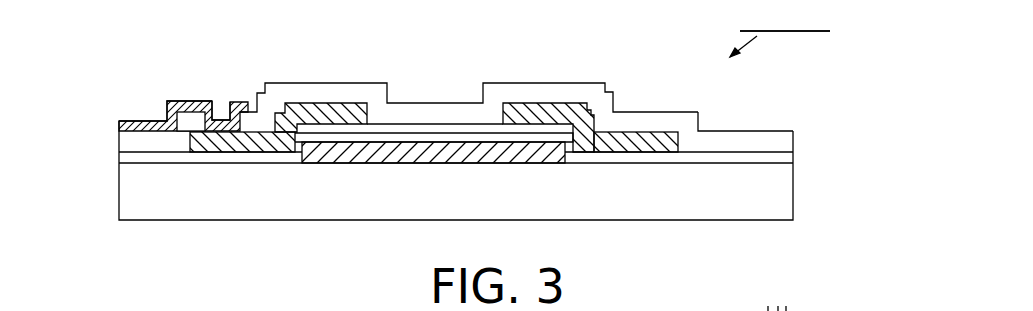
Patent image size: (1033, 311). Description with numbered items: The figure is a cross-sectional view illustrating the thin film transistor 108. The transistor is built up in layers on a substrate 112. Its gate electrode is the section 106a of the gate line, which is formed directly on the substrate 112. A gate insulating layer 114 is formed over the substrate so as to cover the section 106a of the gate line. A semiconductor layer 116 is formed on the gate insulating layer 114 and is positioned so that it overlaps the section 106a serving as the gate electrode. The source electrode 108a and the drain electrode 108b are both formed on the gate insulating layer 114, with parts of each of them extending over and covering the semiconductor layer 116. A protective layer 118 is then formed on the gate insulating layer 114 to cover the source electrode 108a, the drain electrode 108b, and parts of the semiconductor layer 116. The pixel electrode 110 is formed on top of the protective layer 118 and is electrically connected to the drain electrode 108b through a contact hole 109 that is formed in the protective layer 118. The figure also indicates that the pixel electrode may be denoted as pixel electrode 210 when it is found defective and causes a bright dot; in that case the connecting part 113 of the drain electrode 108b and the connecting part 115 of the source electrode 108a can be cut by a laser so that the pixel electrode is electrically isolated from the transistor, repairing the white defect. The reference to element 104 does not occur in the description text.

The gate electrode 104 is at (668, 142).
The section of the gate line 106a is at (417, 152).
The thin film transistor 108 is at (780, 32).
The source electrode 108a is at (633, 134).
The drain electrode 108b is at (302, 115).
The contact hole 109 is at (222, 112).
The pixel electrode 110 is at (132, 122).
The pixel electrode 210 is at (165, 111).
The substrate 112 is at (790, 189).
The connecting part of the drain electrode 113 is at (281, 140).
The gate insulating layer 114 is at (788, 157).
The connecting part of the source electrode 115 is at (648, 140).
The semiconductor layer 116 is at (468, 128).
The protective layer 118 is at (784, 143).